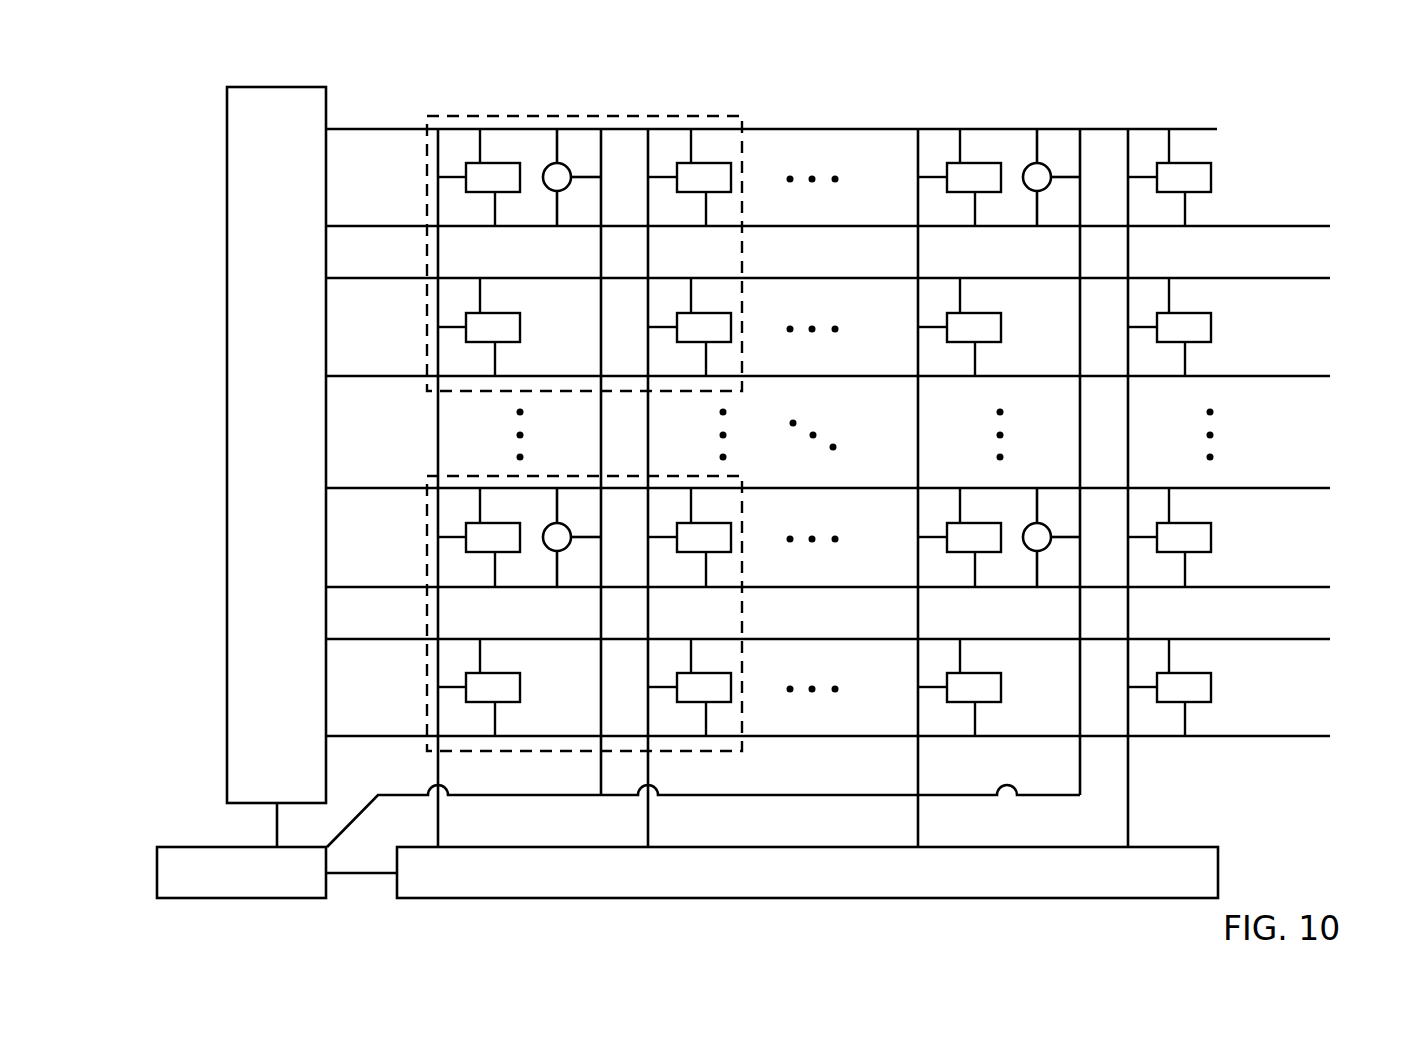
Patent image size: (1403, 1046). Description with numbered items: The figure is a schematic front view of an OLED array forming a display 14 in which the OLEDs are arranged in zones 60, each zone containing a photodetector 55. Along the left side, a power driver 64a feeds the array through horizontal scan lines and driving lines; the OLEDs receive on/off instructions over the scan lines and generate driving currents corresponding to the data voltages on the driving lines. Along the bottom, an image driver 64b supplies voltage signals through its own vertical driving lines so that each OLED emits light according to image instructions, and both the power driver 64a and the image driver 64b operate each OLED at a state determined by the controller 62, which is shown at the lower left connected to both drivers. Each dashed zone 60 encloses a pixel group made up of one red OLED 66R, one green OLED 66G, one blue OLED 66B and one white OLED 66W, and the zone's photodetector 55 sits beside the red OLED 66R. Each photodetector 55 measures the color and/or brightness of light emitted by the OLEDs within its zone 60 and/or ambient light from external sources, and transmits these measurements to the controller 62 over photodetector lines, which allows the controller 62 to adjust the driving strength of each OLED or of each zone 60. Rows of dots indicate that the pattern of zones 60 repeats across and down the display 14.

The display 14 is at (1040, 94).
The photodetector 55 is at (546, 186).
The zone 60 is at (742, 275).
The controller 62 is at (195, 847).
The power driver 64a is at (305, 87).
The image driver 64b is at (522, 898).
The red OLED 66R is at (719, 358).
The green OLED 66G is at (719, 507).
The blue OLED 66B is at (929, 358).
The white OLED 66W is at (929, 507).